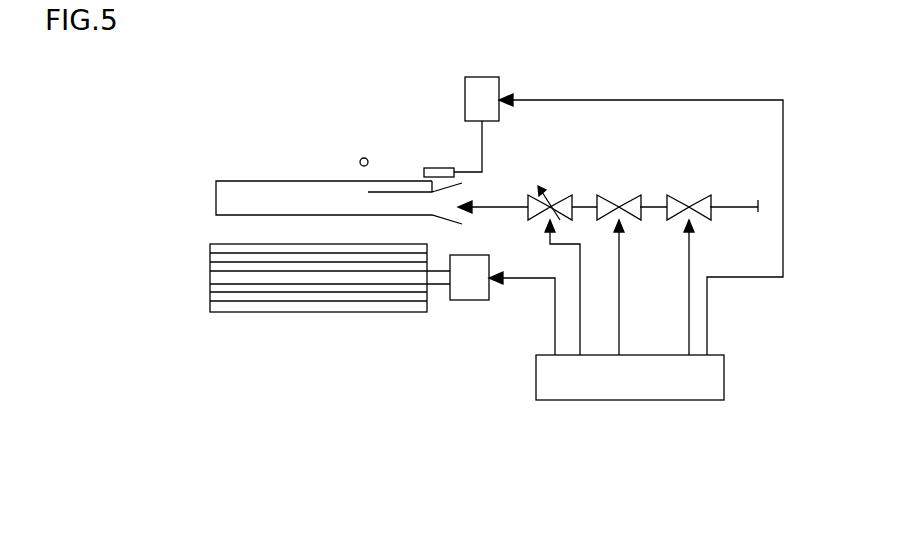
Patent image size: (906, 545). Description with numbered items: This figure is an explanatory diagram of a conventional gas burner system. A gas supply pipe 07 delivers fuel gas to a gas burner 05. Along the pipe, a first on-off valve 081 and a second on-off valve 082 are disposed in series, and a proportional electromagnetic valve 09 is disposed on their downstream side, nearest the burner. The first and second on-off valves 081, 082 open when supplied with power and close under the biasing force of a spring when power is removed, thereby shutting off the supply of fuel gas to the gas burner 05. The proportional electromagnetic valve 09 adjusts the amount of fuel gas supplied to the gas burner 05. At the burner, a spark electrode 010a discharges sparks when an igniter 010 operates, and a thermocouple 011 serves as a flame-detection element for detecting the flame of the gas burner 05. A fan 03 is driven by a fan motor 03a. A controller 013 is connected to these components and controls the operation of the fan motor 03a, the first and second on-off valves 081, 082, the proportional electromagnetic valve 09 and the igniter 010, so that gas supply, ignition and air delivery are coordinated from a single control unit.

The fan 03 is at (210, 278).
The fan motor 03a is at (470, 302).
The gas burner 05 is at (216, 193).
The gas supply pipe 07 is at (738, 205).
The first on-off valve 081 is at (696, 194).
The second on-off valve 082 is at (630, 194).
The proportional electromagnetic valve 09 is at (557, 194).
The igniter 010 is at (482, 77).
The spark electrode 010a is at (415, 177).
The thermocouple 011 is at (361, 158).
The controller 013 is at (633, 402).